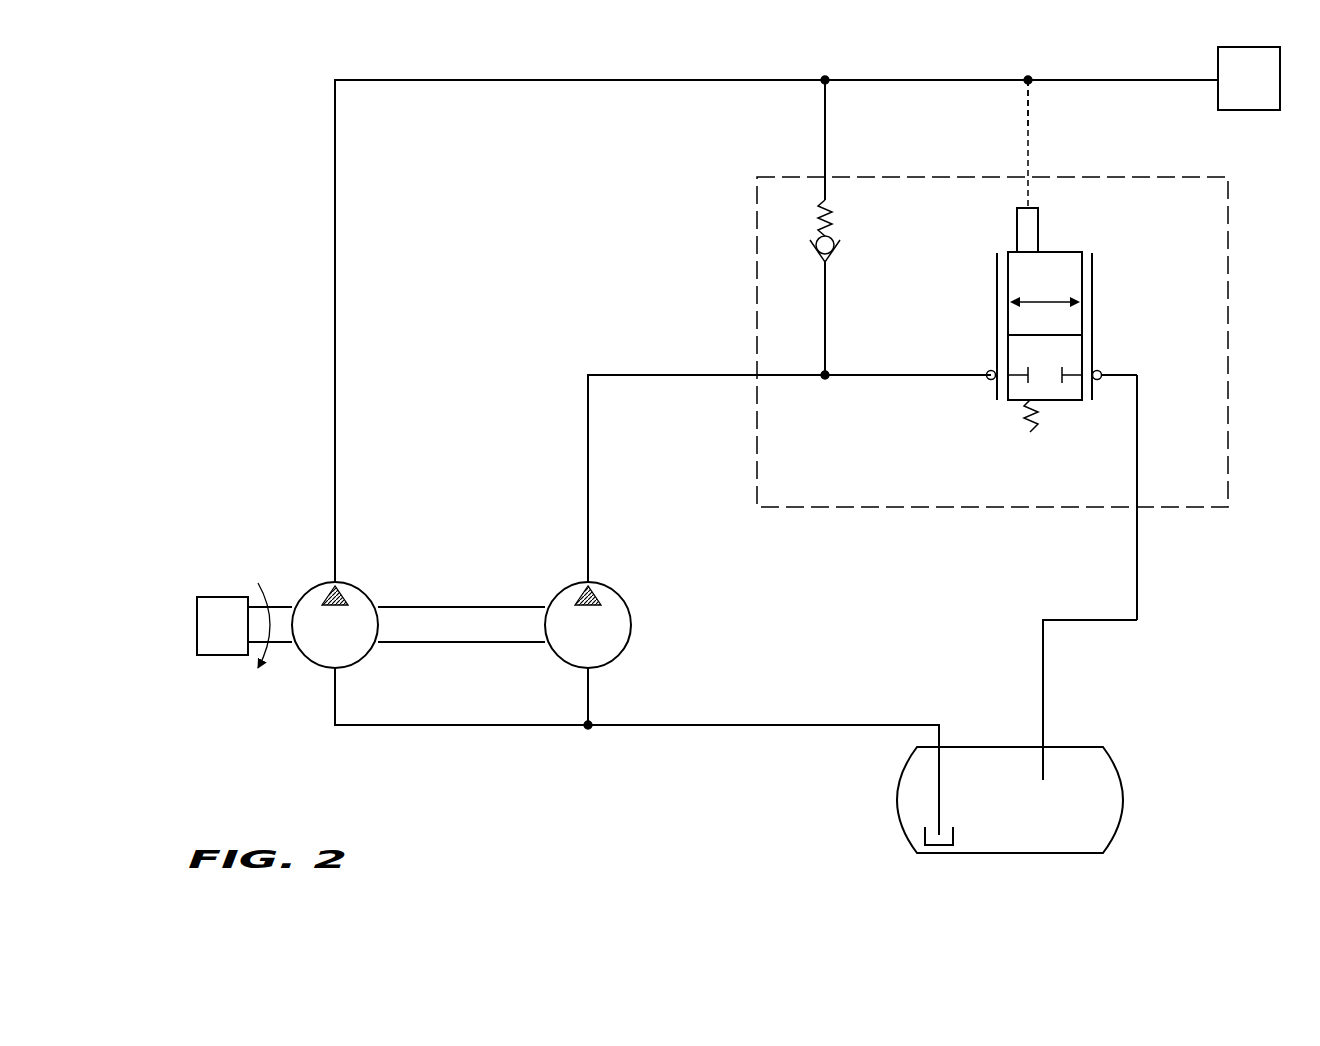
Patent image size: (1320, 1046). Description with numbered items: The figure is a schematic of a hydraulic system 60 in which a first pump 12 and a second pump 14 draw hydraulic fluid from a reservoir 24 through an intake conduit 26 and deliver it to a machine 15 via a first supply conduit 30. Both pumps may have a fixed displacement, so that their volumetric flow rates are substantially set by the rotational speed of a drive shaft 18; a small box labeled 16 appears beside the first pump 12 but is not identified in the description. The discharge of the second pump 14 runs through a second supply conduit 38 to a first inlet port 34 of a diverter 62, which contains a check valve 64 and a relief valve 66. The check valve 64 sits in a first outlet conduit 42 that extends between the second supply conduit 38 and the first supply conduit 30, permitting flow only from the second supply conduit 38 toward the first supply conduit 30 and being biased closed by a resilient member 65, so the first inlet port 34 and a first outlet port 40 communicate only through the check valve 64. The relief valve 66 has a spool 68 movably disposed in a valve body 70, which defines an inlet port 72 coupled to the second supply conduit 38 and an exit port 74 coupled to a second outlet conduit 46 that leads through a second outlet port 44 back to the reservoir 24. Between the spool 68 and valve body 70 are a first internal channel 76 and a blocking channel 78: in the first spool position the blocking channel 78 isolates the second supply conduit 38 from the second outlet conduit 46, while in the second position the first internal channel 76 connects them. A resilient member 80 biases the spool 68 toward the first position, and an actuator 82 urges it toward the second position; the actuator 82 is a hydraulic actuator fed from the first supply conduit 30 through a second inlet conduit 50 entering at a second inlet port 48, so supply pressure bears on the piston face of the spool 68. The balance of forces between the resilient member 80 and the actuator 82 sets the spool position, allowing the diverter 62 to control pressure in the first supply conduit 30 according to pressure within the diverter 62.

The first pump 12 is at (355, 585).
The second pump 14 is at (628, 648).
The machine 15 is at (1249, 78).
The engine 16 is at (244, 625).
The drive shaft 18 is at (420, 607).
The reservoir 24 is at (1123, 785).
The intake conduit 26 is at (775, 725).
The first supply conduit 30 is at (336, 353).
The first inlet port 34 is at (757, 377).
The second supply conduit 38 is at (626, 376).
The first outlet port 40 is at (825, 177).
The first outlet conduit 42 is at (825, 118).
The second outlet port 44 is at (1137, 507).
The second outlet conduit 46 is at (1137, 607).
The second inlet port 48 is at (1028, 150).
The second inlet conduit 50 is at (1028, 148).
The hydraulic system 60 is at (735, 765).
The diverter 62 is at (755, 213).
The check valve 64 is at (835, 258).
The resilient member 65 is at (832, 218).
The relief valve 66 is at (1060, 250).
The spool 68 is at (1092, 272).
The valve body 70 is at (997, 318).
The inlet port 72 is at (988, 380).
The exit port 74 is at (1100, 372).
The first internal channel 76 is at (1048, 305).
The blocking channel 78 is at (1092, 380).
The resilient member 80 is at (1040, 428).
The actuator 82 is at (1017, 228).